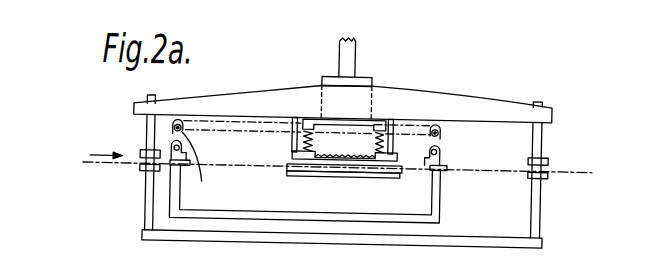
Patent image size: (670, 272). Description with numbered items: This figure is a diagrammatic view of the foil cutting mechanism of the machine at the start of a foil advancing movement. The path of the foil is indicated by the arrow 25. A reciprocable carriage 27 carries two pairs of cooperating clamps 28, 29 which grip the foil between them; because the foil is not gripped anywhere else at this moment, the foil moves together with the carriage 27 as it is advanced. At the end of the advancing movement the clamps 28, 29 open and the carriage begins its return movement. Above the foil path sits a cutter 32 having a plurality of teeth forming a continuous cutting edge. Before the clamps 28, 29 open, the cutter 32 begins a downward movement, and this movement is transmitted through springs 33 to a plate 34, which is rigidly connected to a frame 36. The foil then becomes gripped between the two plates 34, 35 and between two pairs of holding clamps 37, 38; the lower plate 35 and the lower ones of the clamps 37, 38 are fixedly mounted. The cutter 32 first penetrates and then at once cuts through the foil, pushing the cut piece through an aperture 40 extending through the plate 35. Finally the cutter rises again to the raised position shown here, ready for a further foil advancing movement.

The path of foil 25 is at (112, 167).
The reciprocable carriage 27 is at (326, 210).
The cooperating clamps 28 is at (180, 190).
The cooperating clamps 29 is at (437, 135).
The cutter 32 is at (337, 61).
The springs 33 is at (300, 148).
The plate 34 is at (292, 159).
The lower plate 35 is at (293, 178).
The frame 36 is at (466, 106).
The holding clamps 37 is at (563, 192).
The holding clamps 38 is at (148, 197).
The aperture 40 is at (380, 173).